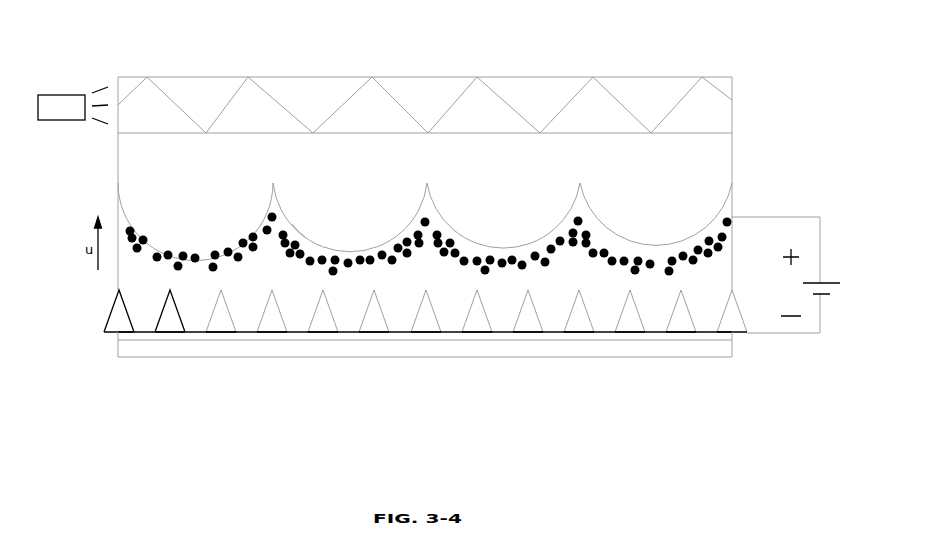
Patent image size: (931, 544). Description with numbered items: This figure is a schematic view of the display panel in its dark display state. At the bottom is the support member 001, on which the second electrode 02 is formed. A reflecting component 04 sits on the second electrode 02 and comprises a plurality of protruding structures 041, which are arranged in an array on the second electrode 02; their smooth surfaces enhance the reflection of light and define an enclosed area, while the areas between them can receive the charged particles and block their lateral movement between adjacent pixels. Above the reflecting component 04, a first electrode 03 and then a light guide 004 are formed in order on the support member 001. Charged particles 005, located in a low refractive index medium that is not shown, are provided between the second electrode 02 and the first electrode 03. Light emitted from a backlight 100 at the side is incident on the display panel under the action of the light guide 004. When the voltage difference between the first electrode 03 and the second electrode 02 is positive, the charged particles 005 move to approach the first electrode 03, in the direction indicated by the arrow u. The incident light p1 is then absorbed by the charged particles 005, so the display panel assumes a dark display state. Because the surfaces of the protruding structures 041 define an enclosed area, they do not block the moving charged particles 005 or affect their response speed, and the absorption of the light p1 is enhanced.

The backlight 100 is at (58, 93).
The light guide 004 is at (530, 77).
The first electrode 03 is at (607, 233).
The light p1 is at (300, 232).
The charged particles 005 is at (308, 268).
The second electrode 02 is at (502, 335).
The support member 001 is at (635, 350).
The protruding structures 041 is at (733, 323).
The reflecting component 04 is at (760, 413).